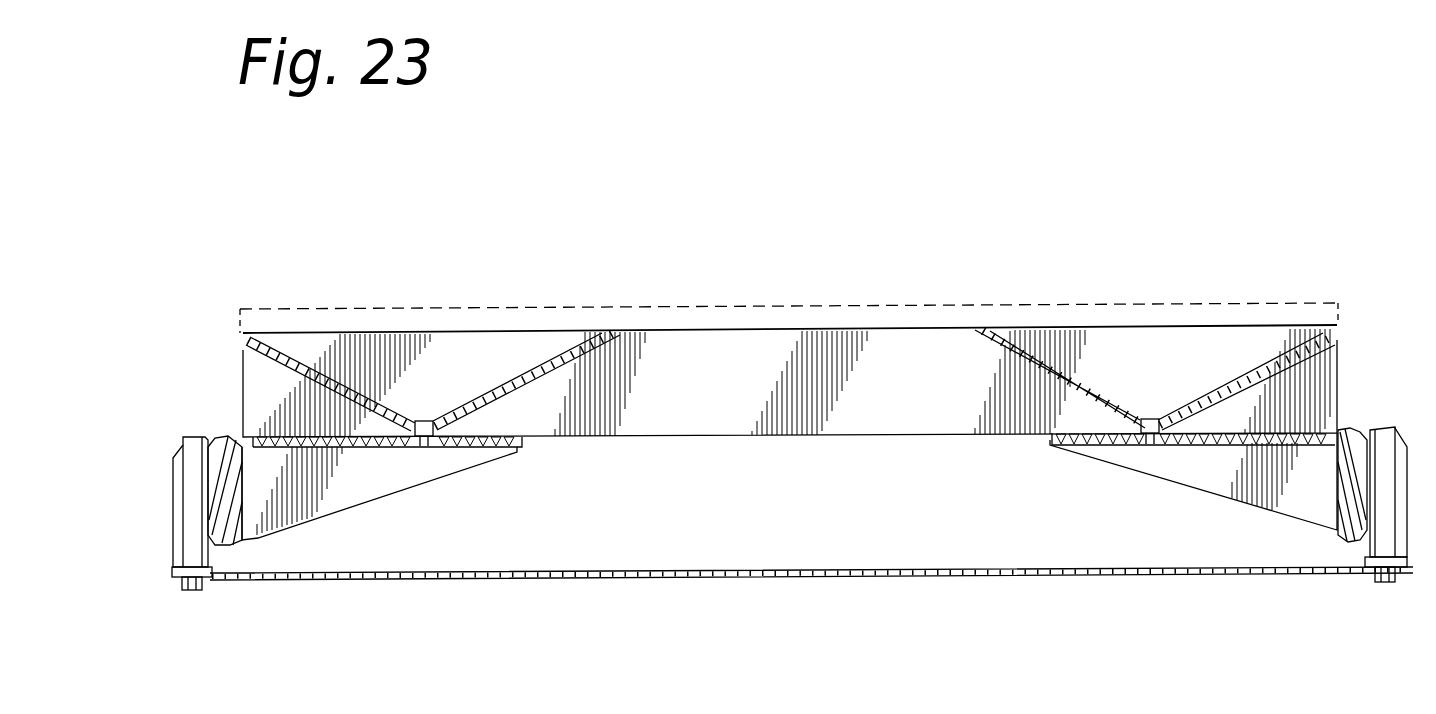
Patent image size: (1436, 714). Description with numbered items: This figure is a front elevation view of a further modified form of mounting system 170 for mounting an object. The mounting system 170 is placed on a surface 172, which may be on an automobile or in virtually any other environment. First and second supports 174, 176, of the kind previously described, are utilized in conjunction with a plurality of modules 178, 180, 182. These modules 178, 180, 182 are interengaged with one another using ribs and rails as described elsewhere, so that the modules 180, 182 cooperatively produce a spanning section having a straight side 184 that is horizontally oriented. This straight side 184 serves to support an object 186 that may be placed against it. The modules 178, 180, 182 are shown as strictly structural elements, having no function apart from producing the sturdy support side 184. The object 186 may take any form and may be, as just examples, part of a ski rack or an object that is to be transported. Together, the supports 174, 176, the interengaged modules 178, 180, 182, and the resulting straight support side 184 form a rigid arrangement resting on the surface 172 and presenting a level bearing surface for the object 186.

The mounting system 170 is at (811, 246).
The surface 172 is at (720, 572).
The first support 174 is at (1425, 465).
The second support 176 is at (143, 487).
The module 178 is at (252, 406).
The module 180 is at (431, 368).
The module 182 is at (862, 407).
The straight side 184 is at (657, 337).
The object 186 is at (880, 303).